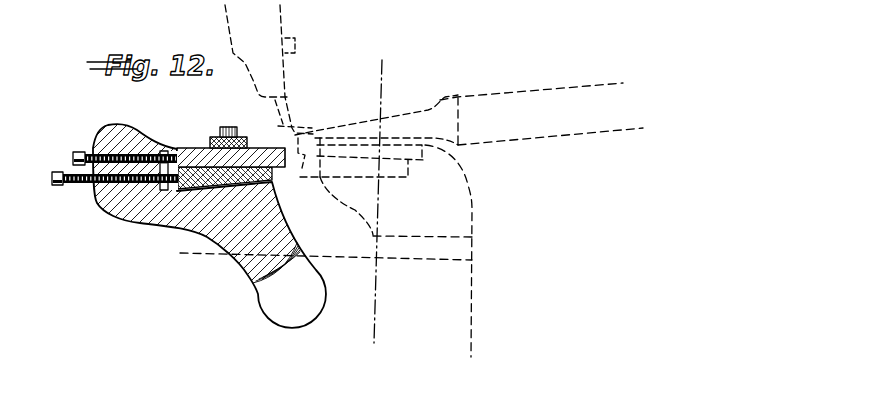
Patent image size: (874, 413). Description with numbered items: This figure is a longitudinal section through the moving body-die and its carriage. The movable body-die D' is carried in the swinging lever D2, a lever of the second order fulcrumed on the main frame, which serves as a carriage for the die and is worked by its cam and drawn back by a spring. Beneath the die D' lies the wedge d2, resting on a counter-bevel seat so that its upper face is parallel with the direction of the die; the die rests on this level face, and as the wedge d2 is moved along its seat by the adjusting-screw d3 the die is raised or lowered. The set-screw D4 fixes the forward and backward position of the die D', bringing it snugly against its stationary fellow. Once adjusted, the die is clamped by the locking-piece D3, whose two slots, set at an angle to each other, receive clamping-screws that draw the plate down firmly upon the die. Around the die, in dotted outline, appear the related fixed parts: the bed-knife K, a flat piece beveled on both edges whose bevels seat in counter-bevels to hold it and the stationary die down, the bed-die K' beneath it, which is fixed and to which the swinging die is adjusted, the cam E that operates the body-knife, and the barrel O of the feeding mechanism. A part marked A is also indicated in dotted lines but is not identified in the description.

The swinging lever D2 is at (273, 227).
The movable body-die D' is at (231, 148).
The locking-piece D3 is at (229, 134).
The set-screw D4 is at (83, 145).
The wedge d2 is at (273, 179).
The adjusting-screw d3 is at (52, 180).
The cam E is at (317, 113).
The bed-knife K is at (376, 127).
The bed-die K' is at (354, 186).
The barrel O is at (534, 220).
The base frame A is at (420, 297).